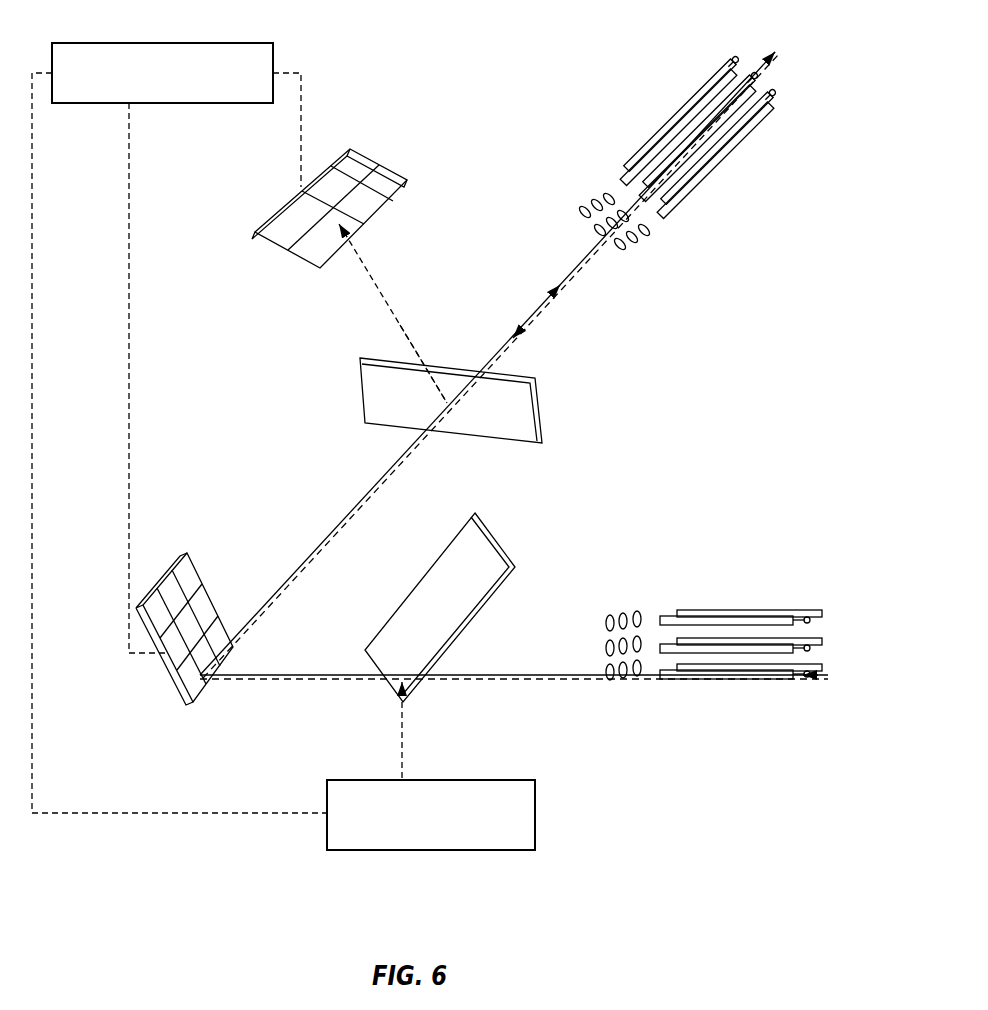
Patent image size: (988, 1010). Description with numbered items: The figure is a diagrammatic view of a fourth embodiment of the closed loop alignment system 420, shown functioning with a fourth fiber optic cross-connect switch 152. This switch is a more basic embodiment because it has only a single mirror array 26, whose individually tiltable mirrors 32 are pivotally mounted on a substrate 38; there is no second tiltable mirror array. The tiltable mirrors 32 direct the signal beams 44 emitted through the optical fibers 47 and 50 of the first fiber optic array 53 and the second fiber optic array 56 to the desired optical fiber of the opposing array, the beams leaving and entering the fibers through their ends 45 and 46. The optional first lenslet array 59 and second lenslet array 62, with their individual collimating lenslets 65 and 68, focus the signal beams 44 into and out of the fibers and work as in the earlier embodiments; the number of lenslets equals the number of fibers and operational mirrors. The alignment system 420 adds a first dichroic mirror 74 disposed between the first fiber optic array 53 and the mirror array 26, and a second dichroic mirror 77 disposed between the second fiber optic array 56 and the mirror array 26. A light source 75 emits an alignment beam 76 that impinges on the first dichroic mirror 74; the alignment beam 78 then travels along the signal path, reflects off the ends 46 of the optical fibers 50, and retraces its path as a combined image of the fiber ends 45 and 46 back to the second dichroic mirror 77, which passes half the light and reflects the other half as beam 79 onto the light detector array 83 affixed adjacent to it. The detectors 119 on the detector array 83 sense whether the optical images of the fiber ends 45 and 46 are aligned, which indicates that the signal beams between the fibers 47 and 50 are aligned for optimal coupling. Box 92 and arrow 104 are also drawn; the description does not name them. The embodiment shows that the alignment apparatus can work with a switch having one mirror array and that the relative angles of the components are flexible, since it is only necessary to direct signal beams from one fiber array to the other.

The processing and control system 92 is at (231, 43).
The detector array 83 is at (358, 194).
The detectors 119 is at (388, 200).
The reflected alignment beam 104 is at (303, 194).
The beam 79 is at (394, 306).
The second dichroic mirror 77 is at (532, 380).
The first dichroic mirror 74 is at (484, 546).
The light source 75 is at (497, 780).
The alignment beam 76 is at (398, 732).
The signal beam 44 is at (362, 497).
The alignment beam 78 is at (323, 545).
The mirror array 26 is at (155, 633).
The tiltable mirrors 32 is at (175, 598).
The substrate 38 is at (150, 618).
The fourth fiber optic cross-connect switch 152 is at (670, 157).
The second fiber optic array 56 is at (721, 169).
The optical fibers 50 is at (698, 172).
The ends 46 is at (662, 213).
The collimating lenslets 68 is at (607, 192).
The second lenslet array 62 is at (628, 295).
The closed loop alignment system 420 is at (601, 462).
The first fiber optic array 53 is at (691, 640).
The optical fibers 47 is at (720, 628).
The ends 45 is at (676, 630).
The collimating lenslets 65 is at (633, 683).
The first lenslet array 59 is at (638, 702).